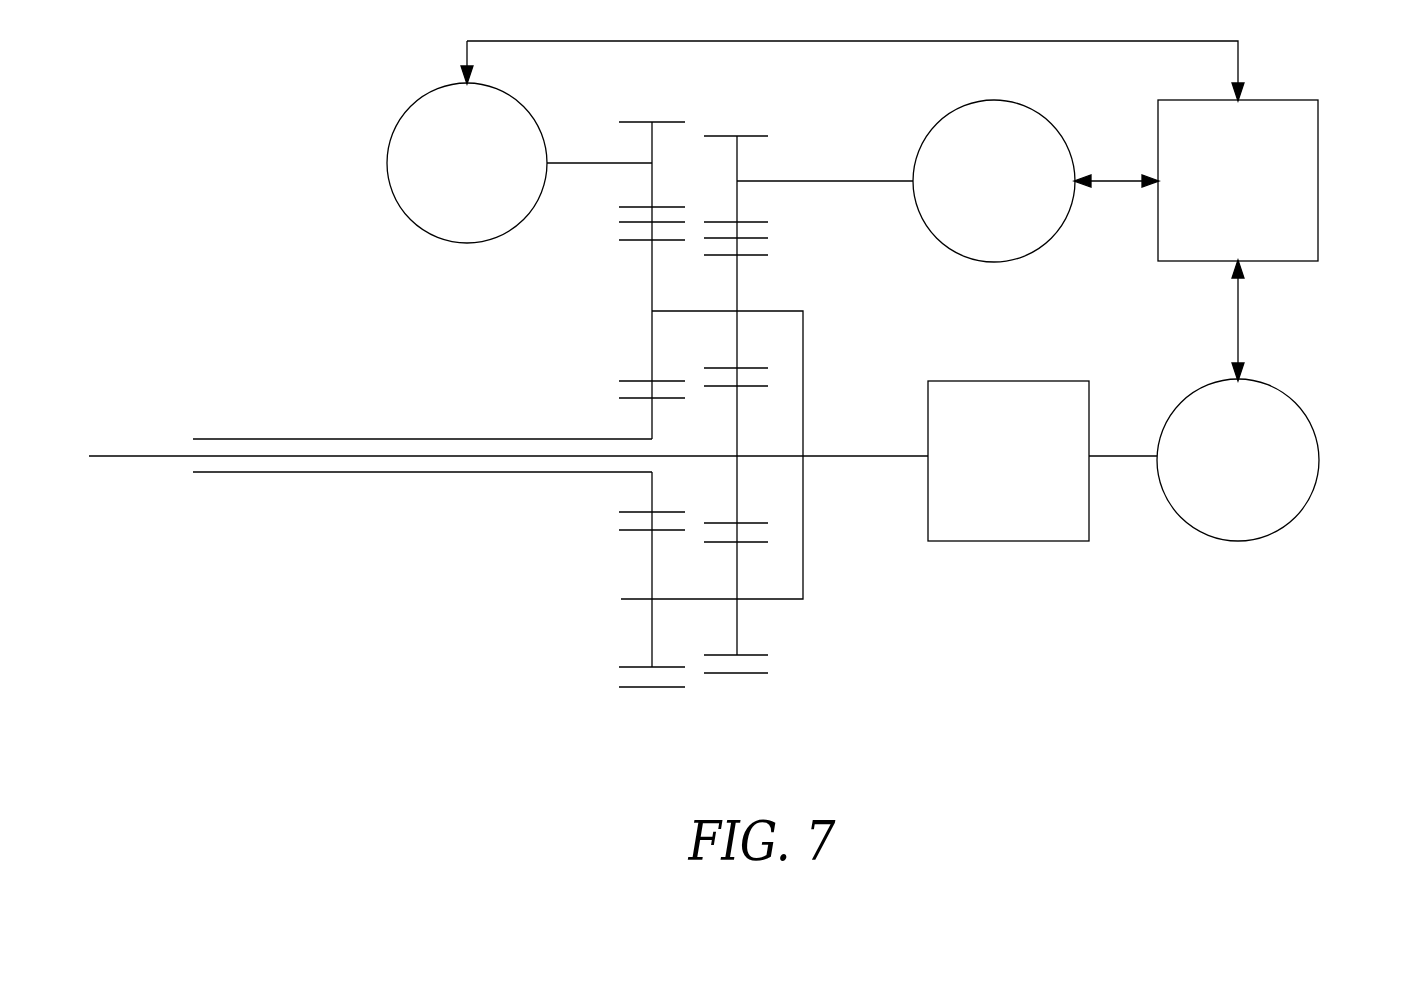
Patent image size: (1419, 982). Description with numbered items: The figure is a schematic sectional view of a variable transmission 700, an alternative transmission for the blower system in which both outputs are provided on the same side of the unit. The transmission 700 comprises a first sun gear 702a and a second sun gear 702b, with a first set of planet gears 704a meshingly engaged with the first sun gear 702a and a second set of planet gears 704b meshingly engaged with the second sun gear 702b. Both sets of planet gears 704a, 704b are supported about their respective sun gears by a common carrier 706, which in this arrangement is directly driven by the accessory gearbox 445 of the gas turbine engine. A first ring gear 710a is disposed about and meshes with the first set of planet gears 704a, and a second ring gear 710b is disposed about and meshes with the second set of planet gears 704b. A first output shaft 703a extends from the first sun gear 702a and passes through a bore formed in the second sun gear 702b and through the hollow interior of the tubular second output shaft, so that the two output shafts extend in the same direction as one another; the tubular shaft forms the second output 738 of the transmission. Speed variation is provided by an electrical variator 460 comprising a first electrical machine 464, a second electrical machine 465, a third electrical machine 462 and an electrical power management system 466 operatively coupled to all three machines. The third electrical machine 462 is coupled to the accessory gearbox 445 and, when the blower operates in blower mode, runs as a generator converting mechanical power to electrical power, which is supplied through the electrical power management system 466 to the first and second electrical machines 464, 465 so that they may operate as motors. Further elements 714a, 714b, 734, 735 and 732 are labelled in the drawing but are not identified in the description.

The variable transmission 700 is at (324, 275).
The electrical variator 460 is at (1308, 24).
The second electrical machine 465 is at (397, 120).
The shaft 735 is at (572, 165).
The clutch 714b is at (640, 120).
The clutch 714a is at (723, 135).
The shaft 734 is at (805, 181).
The first electrical machine 464 is at (988, 100).
The electrical power management system 466 is at (1238, 180).
The third electrical machine 462 is at (1287, 393).
The accessory gearbox 445 is at (1008, 461).
The first set of planet gears 704a is at (737, 278).
The second set of planet gears 704b is at (652, 343).
The first sun gear 702a is at (737, 410).
The second sun gear 702b is at (652, 490).
The common carrier 706 is at (803, 590).
The second ring gear 710b is at (645, 687).
The first ring gear 710a is at (748, 673).
The output shaft 732 is at (860, 456).
The first output shaft 703a is at (167, 456).
The second output 738 is at (232, 439).